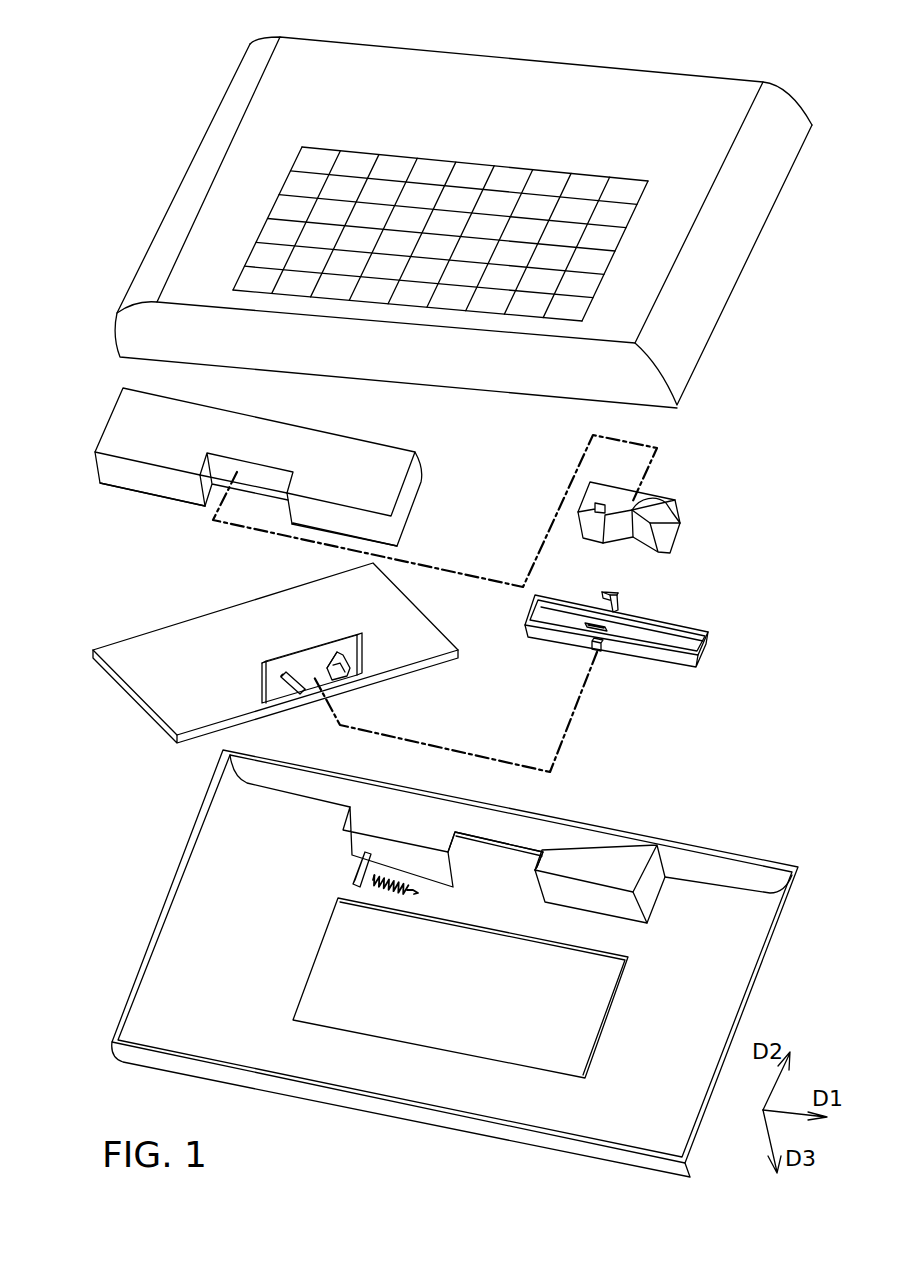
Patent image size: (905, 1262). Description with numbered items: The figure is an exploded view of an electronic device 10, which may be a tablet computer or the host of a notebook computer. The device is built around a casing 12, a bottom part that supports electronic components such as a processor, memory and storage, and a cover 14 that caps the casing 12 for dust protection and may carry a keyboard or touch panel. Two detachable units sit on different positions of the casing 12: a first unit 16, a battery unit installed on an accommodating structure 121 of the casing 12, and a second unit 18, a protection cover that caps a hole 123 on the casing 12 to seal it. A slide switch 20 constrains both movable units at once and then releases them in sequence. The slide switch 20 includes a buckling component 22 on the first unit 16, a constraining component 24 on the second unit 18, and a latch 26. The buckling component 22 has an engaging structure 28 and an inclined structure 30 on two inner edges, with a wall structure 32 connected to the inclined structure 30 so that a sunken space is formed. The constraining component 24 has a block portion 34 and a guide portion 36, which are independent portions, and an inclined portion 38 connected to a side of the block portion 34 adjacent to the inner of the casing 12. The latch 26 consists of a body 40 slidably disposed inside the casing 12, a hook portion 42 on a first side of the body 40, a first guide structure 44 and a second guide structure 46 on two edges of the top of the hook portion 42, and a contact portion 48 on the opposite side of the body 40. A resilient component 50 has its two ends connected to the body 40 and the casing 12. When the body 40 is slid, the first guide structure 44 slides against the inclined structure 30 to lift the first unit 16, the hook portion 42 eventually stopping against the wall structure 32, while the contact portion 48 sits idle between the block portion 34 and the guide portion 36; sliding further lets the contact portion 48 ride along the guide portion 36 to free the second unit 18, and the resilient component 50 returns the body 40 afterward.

The electronic device 10 is at (703, 63).
The casing 12 is at (192, 925).
The cover 14 is at (195, 258).
The first unit 16 is at (378, 473).
The second unit 18 is at (188, 652).
The slide switch 20 is at (796, 443).
The buckling component 22 is at (691, 490).
The constraining component 24 is at (533, 705).
The latch 26 is at (559, 662).
The engaging structure 28 is at (626, 483).
The inclined structure 30 is at (680, 510).
The wall structure 32 is at (692, 534).
The block portion 34 is at (347, 670).
The guide portion 36 is at (300, 694).
The inclined portion 38 is at (340, 678).
The body 40 is at (694, 645).
The hook portion 42 is at (633, 602).
The first guide structure 44 is at (617, 598).
The second guide structure 46 is at (615, 588).
The contact portion 48 is at (532, 705).
The resilient component 50 is at (402, 878).
The accommodating structure 121 is at (503, 858).
The hole 123 is at (558, 1046).